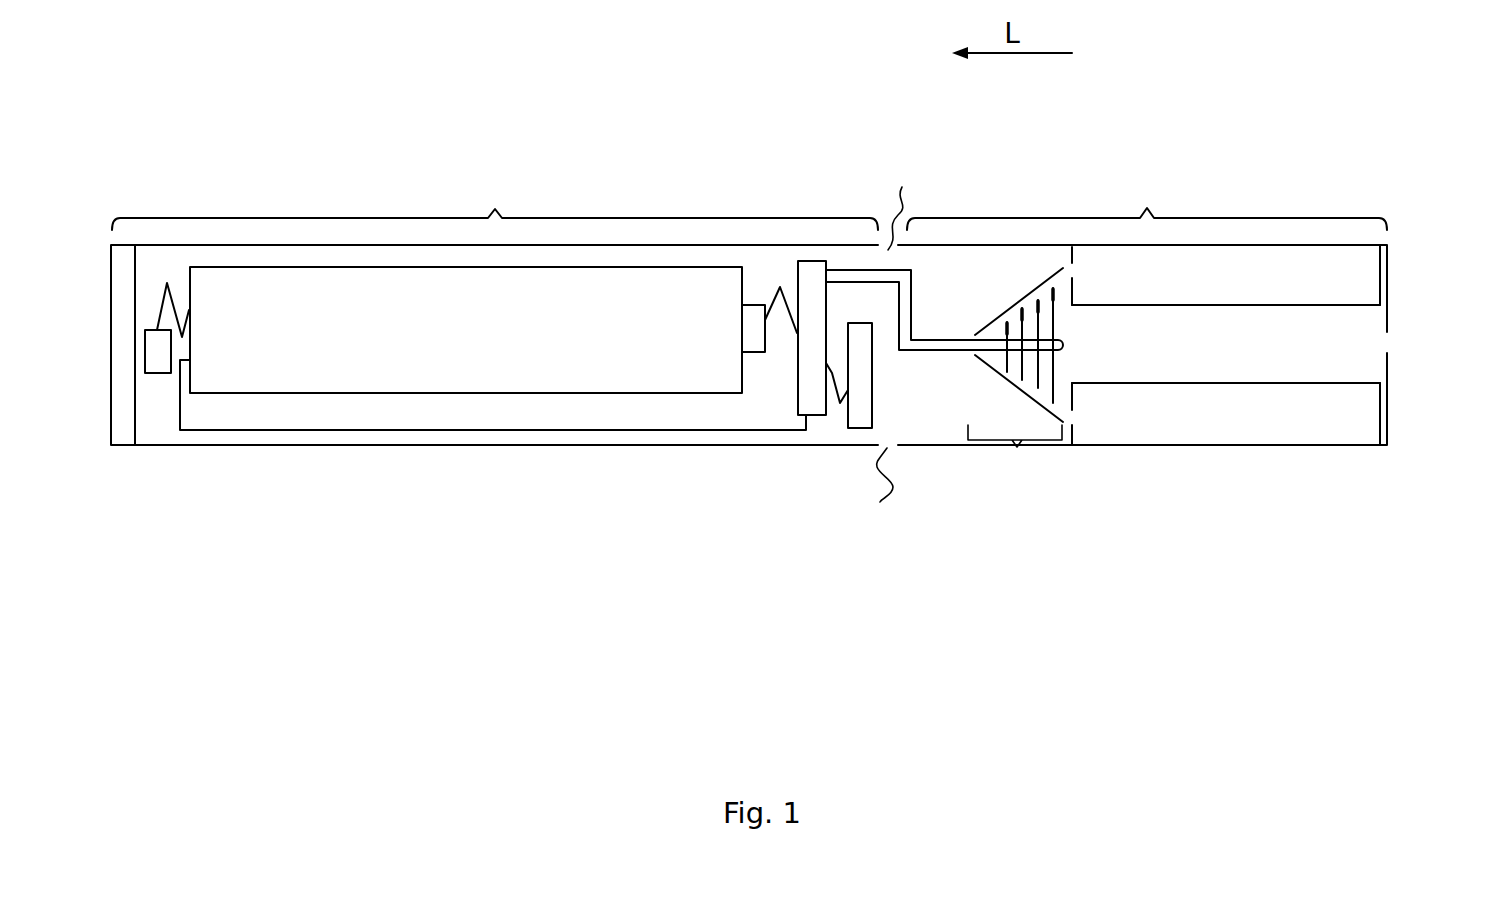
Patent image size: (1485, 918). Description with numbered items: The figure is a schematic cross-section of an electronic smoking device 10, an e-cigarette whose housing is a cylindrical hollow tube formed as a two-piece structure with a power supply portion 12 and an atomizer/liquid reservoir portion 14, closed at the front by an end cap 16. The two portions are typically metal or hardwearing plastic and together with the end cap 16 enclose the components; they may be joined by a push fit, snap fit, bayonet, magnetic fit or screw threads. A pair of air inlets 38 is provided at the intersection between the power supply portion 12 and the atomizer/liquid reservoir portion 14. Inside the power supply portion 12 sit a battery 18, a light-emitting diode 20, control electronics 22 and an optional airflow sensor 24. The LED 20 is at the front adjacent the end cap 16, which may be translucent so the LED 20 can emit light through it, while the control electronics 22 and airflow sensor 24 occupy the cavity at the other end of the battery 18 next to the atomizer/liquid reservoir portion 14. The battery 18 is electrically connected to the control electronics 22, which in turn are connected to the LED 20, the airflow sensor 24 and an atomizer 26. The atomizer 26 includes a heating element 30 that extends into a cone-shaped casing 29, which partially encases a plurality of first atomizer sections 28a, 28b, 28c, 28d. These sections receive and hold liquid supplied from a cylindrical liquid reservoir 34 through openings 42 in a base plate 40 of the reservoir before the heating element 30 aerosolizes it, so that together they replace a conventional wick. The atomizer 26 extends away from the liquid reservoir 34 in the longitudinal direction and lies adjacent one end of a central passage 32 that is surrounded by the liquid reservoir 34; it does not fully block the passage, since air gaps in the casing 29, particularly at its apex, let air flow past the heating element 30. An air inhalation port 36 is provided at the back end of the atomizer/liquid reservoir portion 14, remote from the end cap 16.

The electronic smoking device 10 is at (370, 165).
The power supply portion 12 is at (495, 201).
The atomizer/liquid reservoir portion 14 is at (1147, 201).
The end cap 16 is at (115, 440).
The battery 18 is at (340, 375).
The light-emitting diode 20 is at (158, 373).
The control electronics 22 is at (813, 262).
The airflow sensor 24 is at (860, 428).
The atomizer 26 is at (1017, 447).
The first atomizer section 28a is at (1053, 288).
The first atomizer section 28b is at (1038, 300).
The first atomizer section 28c is at (1022, 308).
The first atomizer section 28d is at (1007, 322).
The cone-shaped casing 29 is at (990, 312).
The heating element 30 is at (1065, 338).
The central passage 32 is at (1188, 348).
The liquid reservoir 34 is at (1290, 262).
The air inhalation port 36 is at (1389, 343).
The air inlets 38 is at (892, 347).
The base plate 40 is at (1073, 412).
The openings 42 is at (1064, 422).